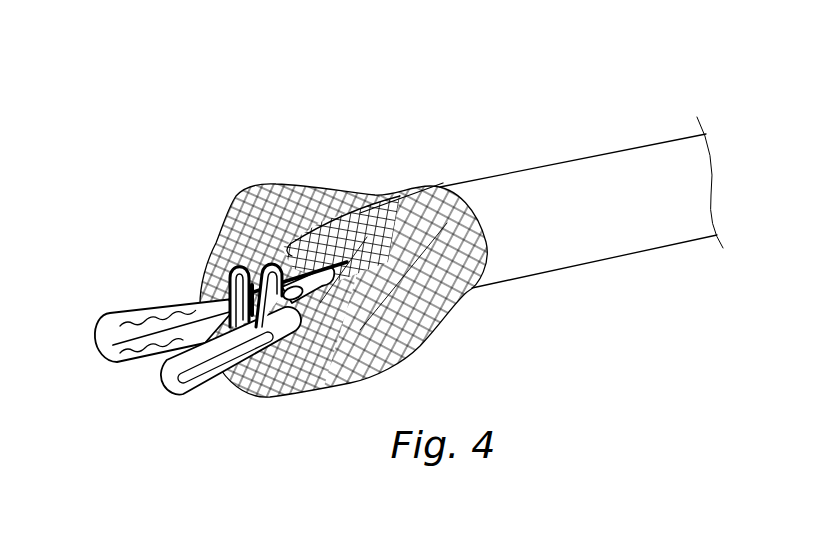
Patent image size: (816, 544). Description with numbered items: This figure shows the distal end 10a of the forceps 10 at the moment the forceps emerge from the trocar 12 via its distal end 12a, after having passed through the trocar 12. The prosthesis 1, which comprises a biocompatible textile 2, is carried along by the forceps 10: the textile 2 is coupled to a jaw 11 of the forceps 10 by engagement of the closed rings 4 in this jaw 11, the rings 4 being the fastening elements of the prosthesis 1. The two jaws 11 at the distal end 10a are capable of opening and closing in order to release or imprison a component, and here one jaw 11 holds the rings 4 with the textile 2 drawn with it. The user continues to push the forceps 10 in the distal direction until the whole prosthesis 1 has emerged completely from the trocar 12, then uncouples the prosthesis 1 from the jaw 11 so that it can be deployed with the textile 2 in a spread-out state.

The prosthesis 1 is at (273, 119).
The biocompatible textile 2 is at (350, 297).
The closed ring 4 is at (282, 268).
The forceps 10 is at (350, 340).
The distal end of the forceps 10a is at (287, 405).
The jaw 11 is at (168, 392).
The trocar 12 is at (552, 142).
The distal end of the trocar 12a is at (477, 300).